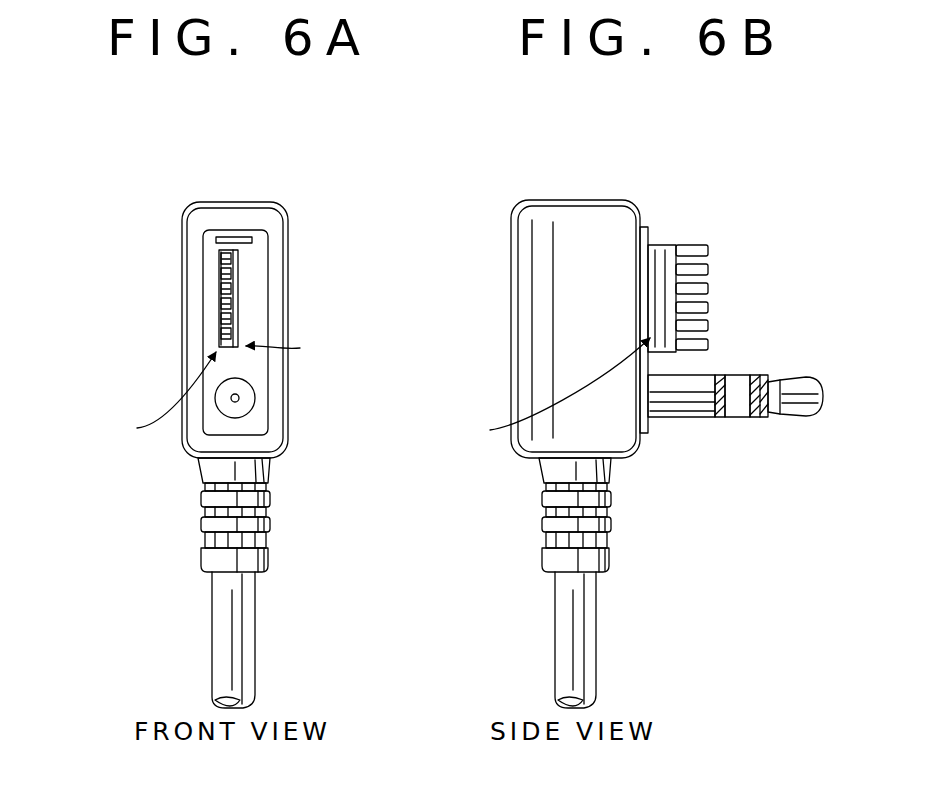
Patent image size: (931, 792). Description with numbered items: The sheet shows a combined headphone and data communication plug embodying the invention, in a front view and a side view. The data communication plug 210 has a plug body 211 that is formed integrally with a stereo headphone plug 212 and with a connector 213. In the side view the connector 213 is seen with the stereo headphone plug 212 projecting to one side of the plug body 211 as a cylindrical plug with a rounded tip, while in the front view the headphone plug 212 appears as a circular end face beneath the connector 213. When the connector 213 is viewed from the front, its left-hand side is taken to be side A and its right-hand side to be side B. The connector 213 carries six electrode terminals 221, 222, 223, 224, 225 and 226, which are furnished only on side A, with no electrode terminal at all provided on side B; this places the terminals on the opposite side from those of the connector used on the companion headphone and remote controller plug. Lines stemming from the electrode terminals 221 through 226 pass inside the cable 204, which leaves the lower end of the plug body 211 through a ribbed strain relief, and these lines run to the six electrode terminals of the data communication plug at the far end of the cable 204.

In FIG. 6A, the data communication plug 210 is at (196, 195).
In FIG. 6B, the data communication plug 210 is at (585, 183).
In FIG. 6A, the plug body 211 is at (287, 204).
In FIG. 6B, the plug body 211 is at (516, 214).
In FIG. 6A, the stereo headphone plug 212 is at (255, 400).
In FIG. 6B, the stereo headphone plug 212 is at (740, 420).
In FIG. 6A, the connector 213 is at (238, 265).
In FIG. 6B, the connector 213 is at (672, 246).
In FIG. 6A, the electrode terminal 221 is at (219, 258).
In FIG. 6B, the electrode terminal 221 is at (706, 256).
In FIG. 6A, the electrode terminal 222 is at (219, 270).
In FIG. 6B, the electrode terminal 222 is at (709, 271).
In FIG. 6A, the electrode terminal 223 is at (219, 285).
In FIG. 6B, the electrode terminal 223 is at (709, 289).
In FIG. 6A, the electrode terminal 224 is at (219, 300).
In FIG. 6B, the electrode terminal 224 is at (709, 307).
In FIG. 6A, the electrode terminal 225 is at (219, 316).
In FIG. 6B, the electrode terminal 225 is at (709, 325).
In FIG. 6A, the electrode terminal 226 is at (219, 331).
In FIG. 6B, the electrode terminal 226 is at (709, 344).
In FIG. 6A, the cable 204 is at (255, 632).
In FIG. 6B, the cable 204 is at (596, 632).